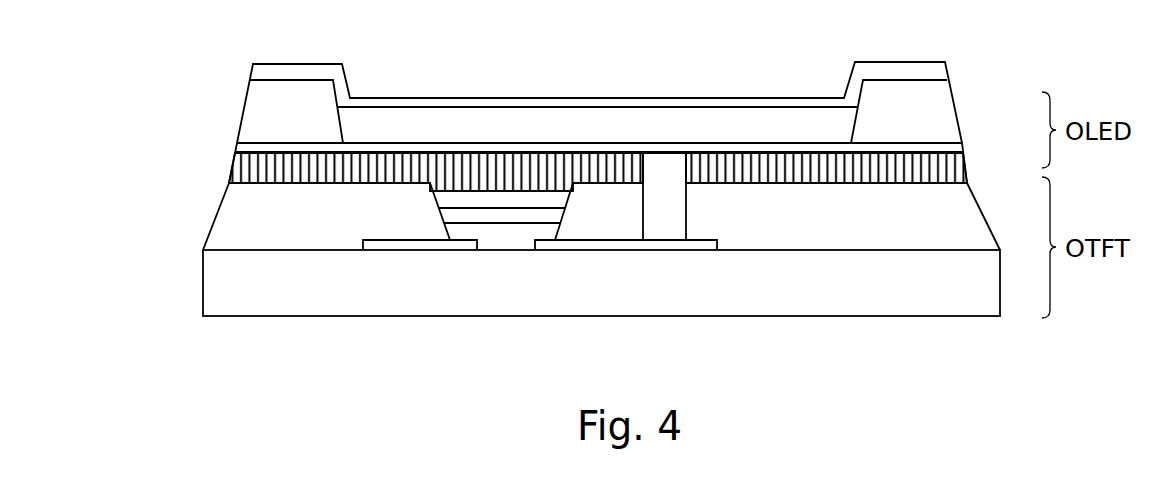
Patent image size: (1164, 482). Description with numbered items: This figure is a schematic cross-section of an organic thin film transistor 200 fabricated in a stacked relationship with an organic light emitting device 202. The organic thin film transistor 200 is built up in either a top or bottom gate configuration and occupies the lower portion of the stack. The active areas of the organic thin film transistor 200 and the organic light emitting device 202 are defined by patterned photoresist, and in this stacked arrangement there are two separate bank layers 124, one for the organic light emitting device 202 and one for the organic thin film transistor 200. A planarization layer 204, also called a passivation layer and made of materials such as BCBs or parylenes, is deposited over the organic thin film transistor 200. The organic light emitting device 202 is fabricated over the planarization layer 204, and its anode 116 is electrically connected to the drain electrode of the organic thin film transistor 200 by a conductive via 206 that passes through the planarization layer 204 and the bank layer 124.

The organic light emitting device 202 is at (447, 79).
The planarization layer 204 is at (512, 167).
The anode 116 is at (627, 142).
The bank layer 124 is at (277, 113).
The conductive via 206 is at (685, 206).
The organic thin film transistor 200 is at (385, 328).